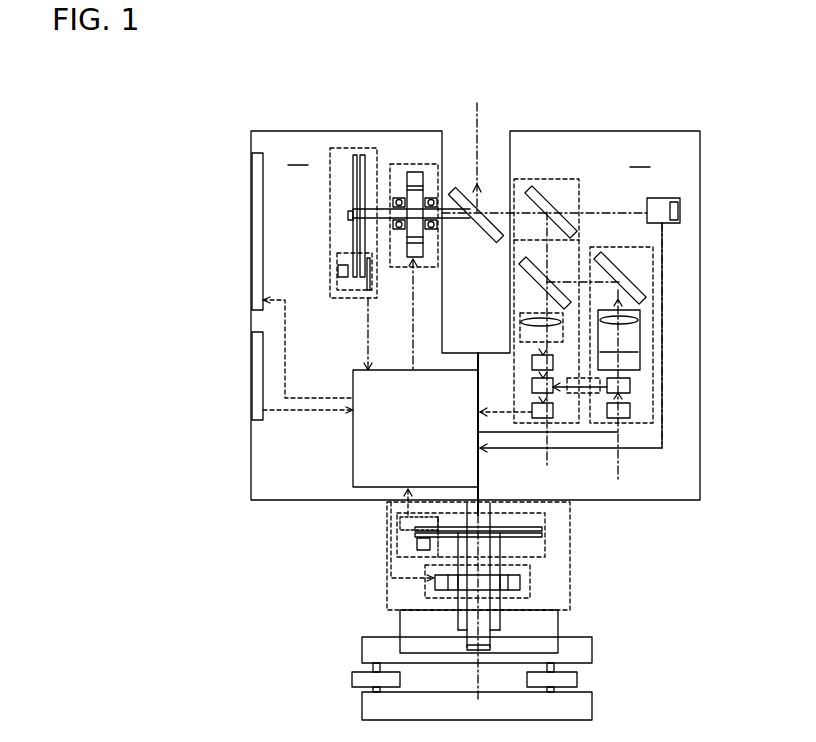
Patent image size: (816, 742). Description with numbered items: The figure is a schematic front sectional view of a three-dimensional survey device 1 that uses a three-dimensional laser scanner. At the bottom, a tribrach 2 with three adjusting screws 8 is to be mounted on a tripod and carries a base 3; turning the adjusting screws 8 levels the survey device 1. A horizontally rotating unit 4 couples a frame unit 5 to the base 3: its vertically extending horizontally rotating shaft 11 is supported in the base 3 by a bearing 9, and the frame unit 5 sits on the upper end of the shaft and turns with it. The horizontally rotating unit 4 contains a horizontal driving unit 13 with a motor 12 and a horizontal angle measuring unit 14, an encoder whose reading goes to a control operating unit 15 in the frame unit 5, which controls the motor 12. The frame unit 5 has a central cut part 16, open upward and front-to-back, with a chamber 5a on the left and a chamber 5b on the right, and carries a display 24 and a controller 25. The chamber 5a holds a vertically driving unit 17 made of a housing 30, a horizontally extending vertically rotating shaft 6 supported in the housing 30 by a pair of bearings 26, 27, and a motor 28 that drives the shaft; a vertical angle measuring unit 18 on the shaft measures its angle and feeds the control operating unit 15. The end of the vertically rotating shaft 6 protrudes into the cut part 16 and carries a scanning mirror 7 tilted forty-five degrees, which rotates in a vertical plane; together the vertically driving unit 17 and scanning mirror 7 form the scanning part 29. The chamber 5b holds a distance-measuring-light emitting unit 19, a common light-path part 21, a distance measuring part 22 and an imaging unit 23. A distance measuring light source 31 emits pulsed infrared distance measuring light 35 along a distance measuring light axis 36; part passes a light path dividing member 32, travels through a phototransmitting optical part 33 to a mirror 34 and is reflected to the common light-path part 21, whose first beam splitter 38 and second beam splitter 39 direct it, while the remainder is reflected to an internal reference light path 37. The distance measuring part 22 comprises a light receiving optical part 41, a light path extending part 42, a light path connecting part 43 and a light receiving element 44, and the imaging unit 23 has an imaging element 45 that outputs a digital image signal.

The three-dimensional survey device 1 is at (605, 118).
The tribrach 2 is at (338, 680).
The base 3 is at (557, 627).
The horizontally rotating unit 4 is at (573, 543).
The frame unit 5 is at (475, 344).
The chamber 5a is at (297, 156).
The chamber 5b is at (640, 158).
The vertically rotating shaft 6 is at (453, 222).
The scanning mirror 7 is at (456, 193).
The adjusting screw 8 is at (577, 680).
The bearing 9 is at (500, 622).
The horizontally rotating shaft 11 is at (458, 617).
The motor 12 is at (540, 580).
The horizontal driving unit 13 is at (540, 588).
The horizontal angle measuring unit 14 is at (547, 533).
The control operating unit 15 is at (353, 452).
The cut part 16 is at (467, 297).
The vertically driving unit 17 is at (388, 187).
The vertical angle measuring unit 18 is at (330, 218).
The distance-measuring-light emitting unit 19 is at (688, 393).
The common light-path part 21 is at (522, 179).
The distance measuring part 22 is at (508, 350).
The imaging unit 23 is at (670, 198).
The display 24 is at (250, 198).
The controller 25 is at (250, 368).
The bearing 26 is at (432, 196).
The bearing 27 is at (397, 230).
The motor 28 is at (405, 165).
The scanning part 29 is at (448, 143).
The housing 30 is at (400, 164).
The distance measuring light source 31 is at (620, 420).
The light path dividing member 32 is at (633, 395).
The phototransmitting optical part 33 is at (640, 327).
The mirror 34 is at (634, 292).
The distance measuring light 35 is at (620, 352).
The distance measuring light axis 36 is at (483, 200).
The internal reference light path 37 is at (590, 395).
The first beam splitter 38 is at (540, 268).
The second beam splitter 39 is at (533, 188).
The light receiving optical part 41 is at (513, 313).
The light path extending part 42 is at (532, 365).
The light path connecting part 43 is at (532, 387).
The light receiving element 44 is at (537, 420).
The imaging element 45 is at (677, 220).